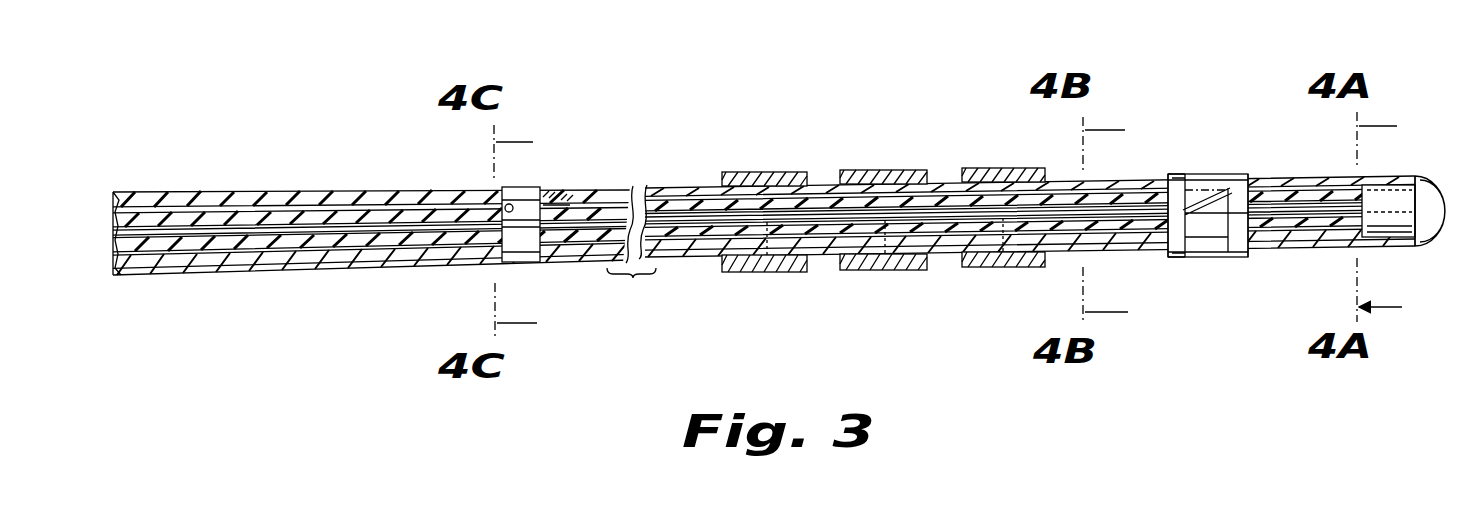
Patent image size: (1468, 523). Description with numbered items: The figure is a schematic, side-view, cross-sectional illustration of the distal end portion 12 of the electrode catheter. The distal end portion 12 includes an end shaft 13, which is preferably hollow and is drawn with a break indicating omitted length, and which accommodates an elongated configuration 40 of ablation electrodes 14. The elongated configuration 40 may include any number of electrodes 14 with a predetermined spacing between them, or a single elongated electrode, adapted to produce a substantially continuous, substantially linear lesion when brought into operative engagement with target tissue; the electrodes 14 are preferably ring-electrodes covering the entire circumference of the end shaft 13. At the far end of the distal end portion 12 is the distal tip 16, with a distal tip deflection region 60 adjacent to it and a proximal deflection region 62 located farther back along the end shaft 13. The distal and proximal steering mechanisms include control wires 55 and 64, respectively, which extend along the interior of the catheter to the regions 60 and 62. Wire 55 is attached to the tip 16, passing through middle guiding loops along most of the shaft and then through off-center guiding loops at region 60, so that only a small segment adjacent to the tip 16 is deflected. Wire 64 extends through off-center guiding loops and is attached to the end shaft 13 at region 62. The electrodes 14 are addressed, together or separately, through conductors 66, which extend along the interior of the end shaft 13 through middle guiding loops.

The distal end portion 12 is at (1129, 86).
The end shaft 13 is at (634, 299).
The ablation electrodes 14 is at (883, 237).
The distal tip 16 is at (1423, 173).
The elongated configuration 40 is at (883, 203).
The control wire 55 is at (1210, 190).
The distal tip deflection region 60 is at (1338, 270).
The proximal deflection region 62 is at (582, 167).
The control wire 64 is at (500, 207).
The conductors 66 is at (1213, 254).